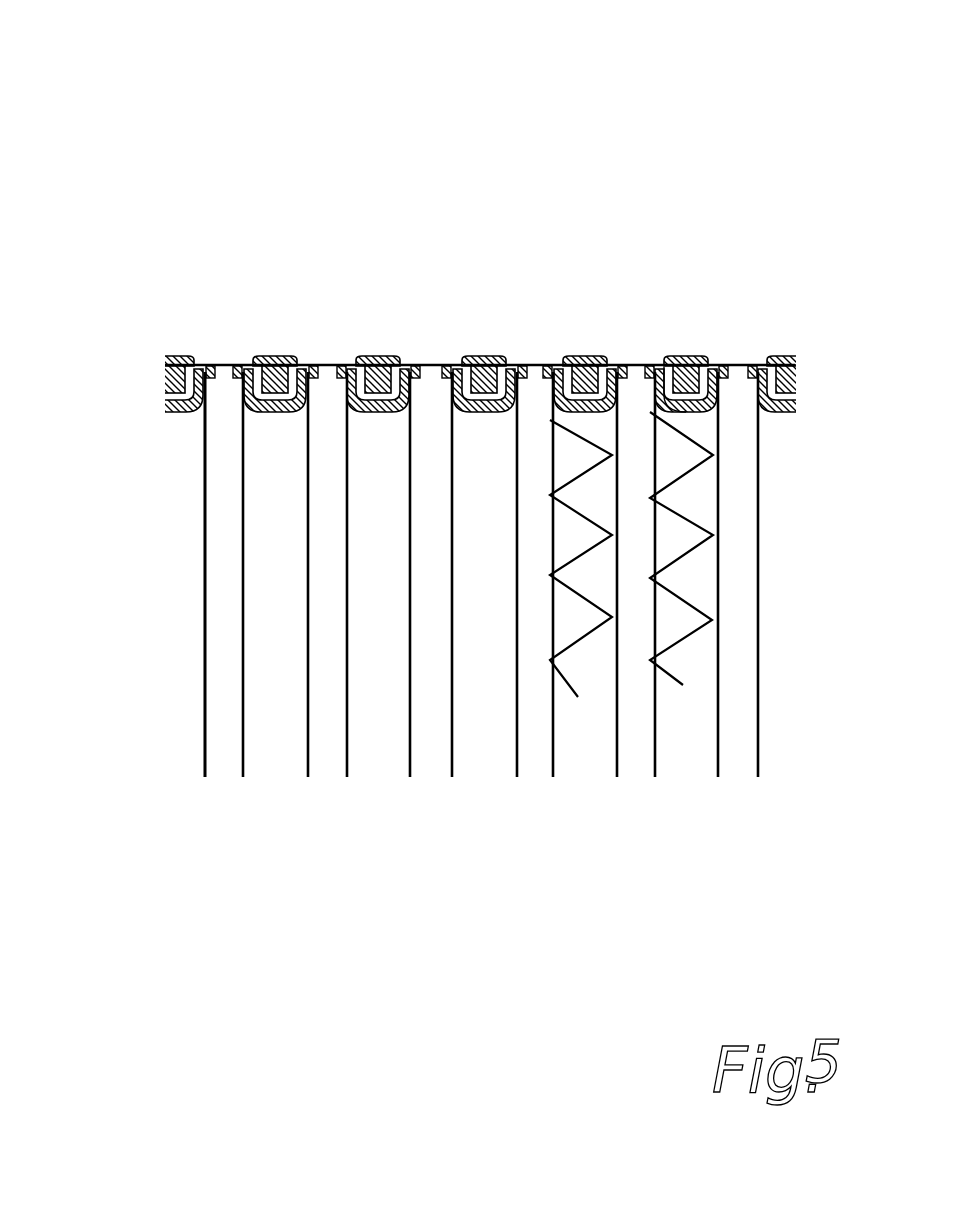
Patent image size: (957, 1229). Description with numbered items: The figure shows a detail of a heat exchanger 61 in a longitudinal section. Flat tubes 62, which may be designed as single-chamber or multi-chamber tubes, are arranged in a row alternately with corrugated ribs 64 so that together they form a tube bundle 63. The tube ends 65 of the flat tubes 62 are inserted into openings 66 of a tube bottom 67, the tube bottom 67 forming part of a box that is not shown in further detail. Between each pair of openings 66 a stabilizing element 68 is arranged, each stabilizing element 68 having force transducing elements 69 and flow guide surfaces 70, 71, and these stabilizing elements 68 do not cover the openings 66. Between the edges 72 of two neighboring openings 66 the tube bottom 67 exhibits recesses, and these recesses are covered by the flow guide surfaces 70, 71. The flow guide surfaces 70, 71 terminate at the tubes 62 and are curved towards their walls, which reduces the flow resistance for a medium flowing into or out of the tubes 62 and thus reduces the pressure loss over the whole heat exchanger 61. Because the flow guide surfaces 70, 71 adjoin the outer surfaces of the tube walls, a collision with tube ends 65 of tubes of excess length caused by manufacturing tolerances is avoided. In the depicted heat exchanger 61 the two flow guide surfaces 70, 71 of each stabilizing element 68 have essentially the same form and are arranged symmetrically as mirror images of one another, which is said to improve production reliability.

The heat exchanger 61 is at (200, 150).
The flat tube 62 is at (205, 610).
The tube bundle 63 is at (764, 830).
The corrugated rib 64 is at (690, 640).
The tube end 65 is at (236, 366).
The opening 66 is at (327, 360).
The tube bottom 67 is at (546, 366).
The stabilizing element 68 is at (682, 345).
The force transducing element 69 is at (692, 366).
The flow guide surface 70 is at (661, 366).
The flow guide surface 71 is at (706, 366).
The edge 72 is at (436, 366).